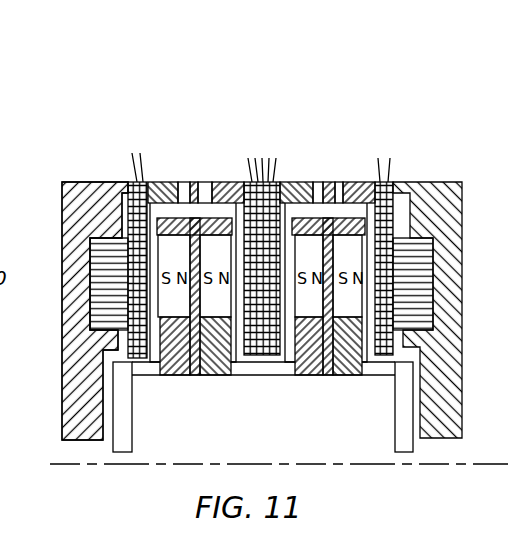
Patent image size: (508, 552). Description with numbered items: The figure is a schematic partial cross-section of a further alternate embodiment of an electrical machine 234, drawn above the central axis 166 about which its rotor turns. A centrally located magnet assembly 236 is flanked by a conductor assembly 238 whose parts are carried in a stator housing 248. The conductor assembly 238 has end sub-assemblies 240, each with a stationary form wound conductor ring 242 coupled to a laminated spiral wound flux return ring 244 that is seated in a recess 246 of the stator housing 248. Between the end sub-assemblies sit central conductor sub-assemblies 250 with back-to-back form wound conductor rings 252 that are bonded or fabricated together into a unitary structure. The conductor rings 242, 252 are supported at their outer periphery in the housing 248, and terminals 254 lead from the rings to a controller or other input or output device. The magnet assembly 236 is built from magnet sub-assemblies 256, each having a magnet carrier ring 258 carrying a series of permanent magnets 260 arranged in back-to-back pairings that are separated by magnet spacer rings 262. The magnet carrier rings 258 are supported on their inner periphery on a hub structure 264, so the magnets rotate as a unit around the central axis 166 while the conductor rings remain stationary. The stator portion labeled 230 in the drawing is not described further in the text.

The central axis 166 is at (63, 464).
The stator assembly 230 is at (65, 311).
The electrical machine 234 is at (98, 181).
The magnet assembly 236 is at (212, 220).
The conductor assembly 238 is at (128, 210).
The end sub-assembly 240 is at (130, 350).
The stationary form wound conductor ring 242 is at (148, 376).
The laminated spiral wound flux return ring 244 is at (90, 257).
The recess 246 is at (415, 250).
The stator housing 248 is at (400, 182).
The central conductor sub-assembly 250 is at (288, 182).
The form wound conductor ring 252 is at (285, 204).
The terminals 254 is at (140, 170).
The magnet sub-assembly 256 is at (212, 376).
The magnet carrier ring 258 is at (284, 363).
The permanent magnet 260 is at (343, 377).
The magnet spacer ring 262 is at (323, 377).
The hub structure 264 is at (133, 427).